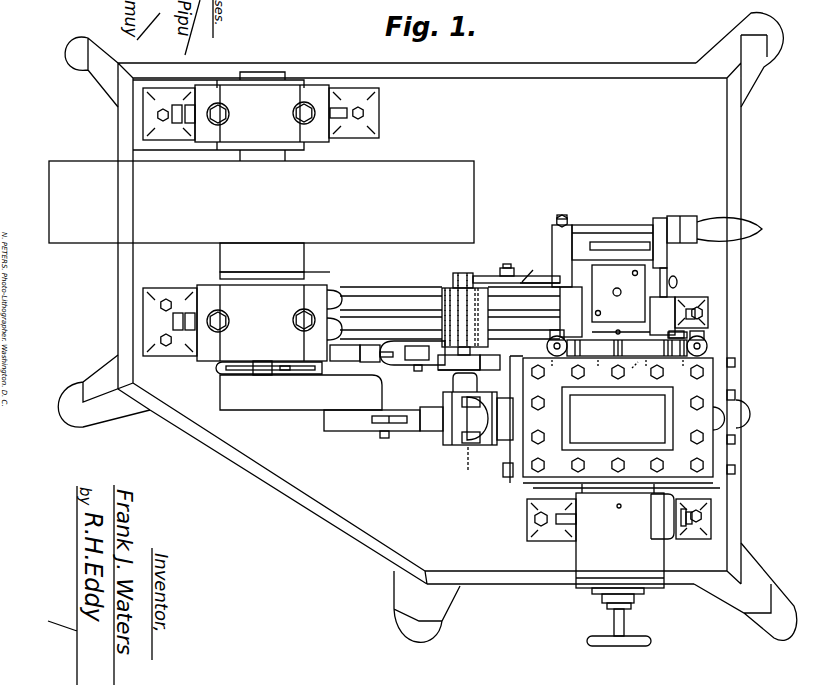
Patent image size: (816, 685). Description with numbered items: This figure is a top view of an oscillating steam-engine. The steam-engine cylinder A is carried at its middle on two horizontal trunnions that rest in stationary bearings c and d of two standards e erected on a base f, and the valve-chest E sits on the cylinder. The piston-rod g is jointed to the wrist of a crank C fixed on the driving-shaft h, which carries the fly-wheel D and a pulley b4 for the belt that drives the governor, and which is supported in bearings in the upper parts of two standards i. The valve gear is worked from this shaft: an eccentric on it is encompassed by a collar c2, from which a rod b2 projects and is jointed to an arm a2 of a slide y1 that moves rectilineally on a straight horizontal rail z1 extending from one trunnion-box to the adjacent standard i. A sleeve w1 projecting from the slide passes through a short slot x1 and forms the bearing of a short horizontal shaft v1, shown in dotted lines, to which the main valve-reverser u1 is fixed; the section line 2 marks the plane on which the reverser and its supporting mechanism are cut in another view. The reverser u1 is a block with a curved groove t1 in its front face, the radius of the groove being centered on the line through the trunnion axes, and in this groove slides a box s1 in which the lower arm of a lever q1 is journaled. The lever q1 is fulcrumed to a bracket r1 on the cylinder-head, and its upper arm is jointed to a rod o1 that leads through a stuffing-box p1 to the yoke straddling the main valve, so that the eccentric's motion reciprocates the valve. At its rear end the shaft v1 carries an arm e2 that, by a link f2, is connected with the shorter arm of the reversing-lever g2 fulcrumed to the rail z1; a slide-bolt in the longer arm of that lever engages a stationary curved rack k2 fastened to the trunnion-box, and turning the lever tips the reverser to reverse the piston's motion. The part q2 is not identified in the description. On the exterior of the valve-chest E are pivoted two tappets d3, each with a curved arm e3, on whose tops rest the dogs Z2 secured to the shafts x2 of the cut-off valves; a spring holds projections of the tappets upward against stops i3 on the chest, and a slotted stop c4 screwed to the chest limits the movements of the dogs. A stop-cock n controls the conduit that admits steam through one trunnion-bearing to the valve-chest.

The steam-engine cylinder A is at (534, 483).
The fly-wheel D is at (261, 202).
The standards i is at (256, 216).
The pulley b4 is at (262, 261).
The driving-shaft h is at (308, 272).
The collar c2 is at (221, 367).
The crank C is at (301, 392).
The piston-rod g is at (383, 422).
The rod b2 is at (358, 362).
The arm a2 is at (412, 356).
The rail z1 is at (443, 311).
The slide y1 is at (465, 310).
The slot x1 is at (444, 289).
The sleeve w1 is at (450, 288).
The shaft v1 is at (458, 288).
The section line 2 is at (464, 273).
The arm e2 is at (516, 272).
The link f2 is at (522, 282).
The reversing-lever g2 is at (602, 276).
The curved rack k2 is at (665, 257).
The hand lever q2 is at (714, 229).
The bearing d is at (618, 293).
The arm e3 is at (614, 333).
The standards e is at (707, 297).
The dogs Z2 is at (627, 348).
The stops i3 is at (548, 342).
The valve-chest E is at (624, 417).
The tappets d3 is at (621, 369).
The shafts x2 is at (620, 369).
The bolt c4 is at (630, 373).
The main valve-reverser u1 is at (459, 359).
The curved groove t1 is at (486, 371).
The bearing or box s1 is at (452, 375).
The lever q1 is at (442, 454).
The rod o1 is at (477, 418).
The bracket r1 is at (491, 455).
The stuffing-box p1 is at (505, 437).
The base f is at (388, 471).
The bearing c is at (643, 540).
The stop-cock n is at (634, 600).